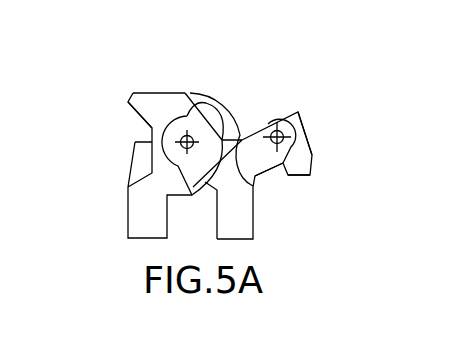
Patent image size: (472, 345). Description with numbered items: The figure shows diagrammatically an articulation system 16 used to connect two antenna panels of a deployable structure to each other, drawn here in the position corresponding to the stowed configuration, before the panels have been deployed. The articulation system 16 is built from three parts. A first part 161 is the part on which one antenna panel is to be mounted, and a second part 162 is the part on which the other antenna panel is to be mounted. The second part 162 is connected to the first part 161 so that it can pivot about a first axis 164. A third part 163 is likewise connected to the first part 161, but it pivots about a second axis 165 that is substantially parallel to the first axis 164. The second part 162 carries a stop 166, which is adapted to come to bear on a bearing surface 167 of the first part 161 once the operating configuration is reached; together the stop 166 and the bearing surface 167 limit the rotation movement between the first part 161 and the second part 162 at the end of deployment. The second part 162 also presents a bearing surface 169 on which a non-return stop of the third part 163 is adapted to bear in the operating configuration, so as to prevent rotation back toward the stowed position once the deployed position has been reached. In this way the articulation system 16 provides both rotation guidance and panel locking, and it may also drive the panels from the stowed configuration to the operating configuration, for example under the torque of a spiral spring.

The articulation system 16 is at (141, 44).
The first part 161 is at (237, 208).
The second part 162 is at (128, 220).
The third part 163 is at (298, 112).
The first axis 164 is at (188, 141).
The second axis 165 is at (312, 155).
The stop 166 is at (130, 155).
The bearing surface 167 is at (246, 141).
The bearing surface 169 is at (141, 117).